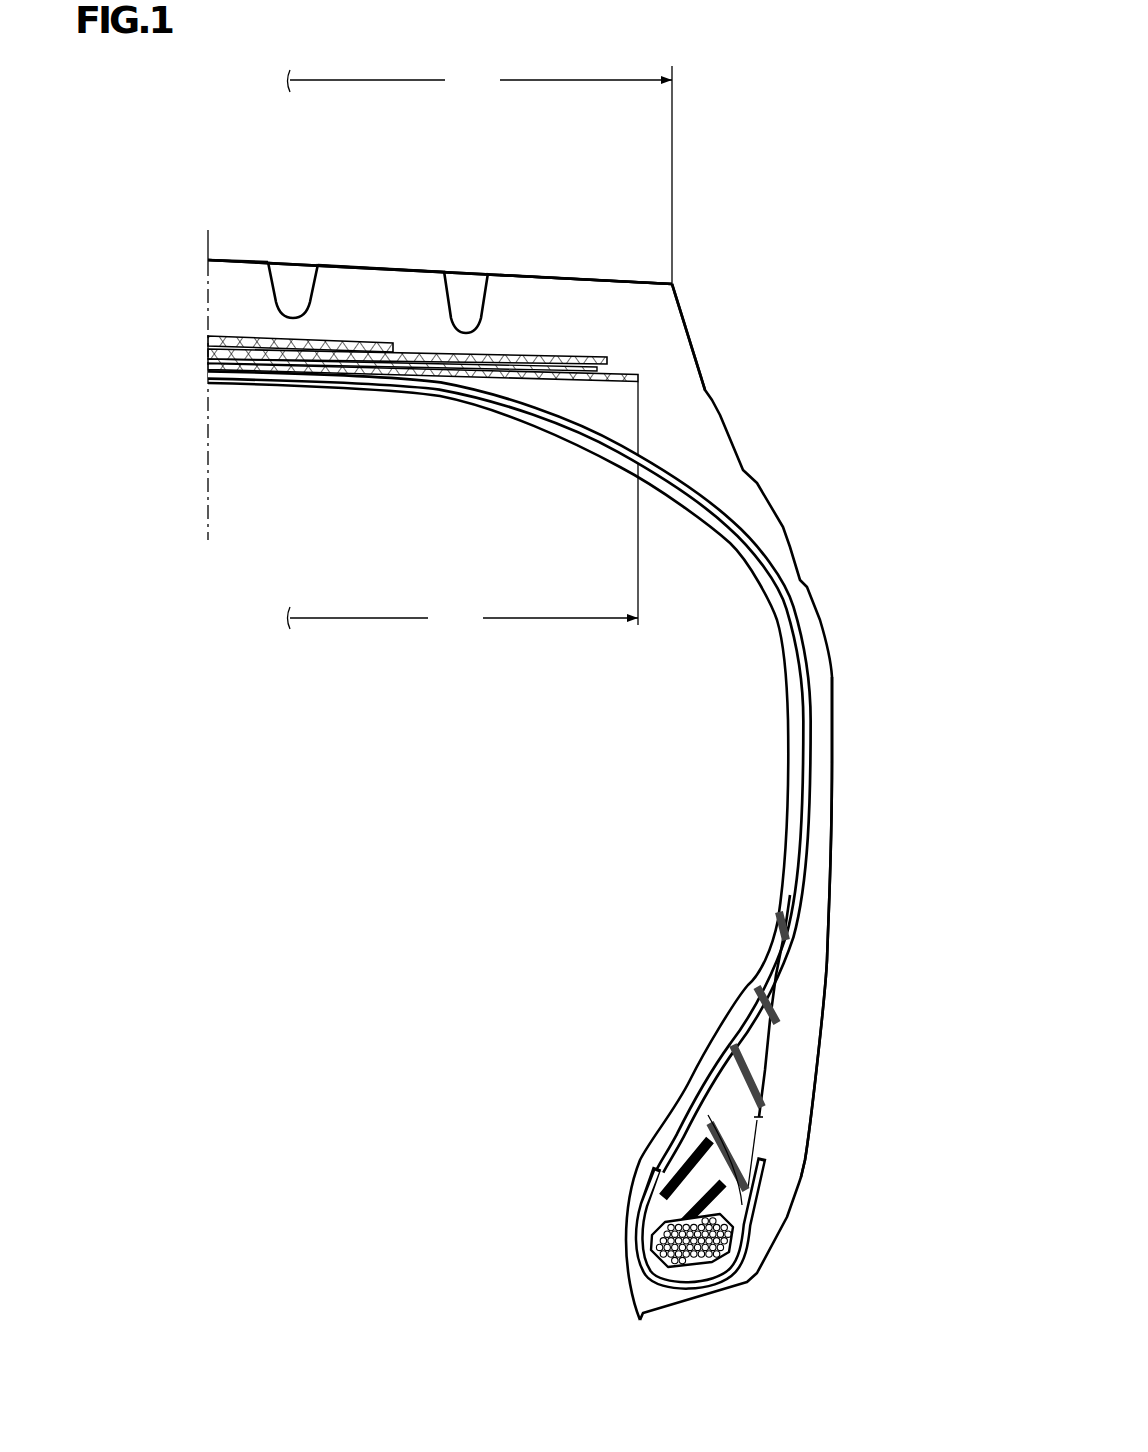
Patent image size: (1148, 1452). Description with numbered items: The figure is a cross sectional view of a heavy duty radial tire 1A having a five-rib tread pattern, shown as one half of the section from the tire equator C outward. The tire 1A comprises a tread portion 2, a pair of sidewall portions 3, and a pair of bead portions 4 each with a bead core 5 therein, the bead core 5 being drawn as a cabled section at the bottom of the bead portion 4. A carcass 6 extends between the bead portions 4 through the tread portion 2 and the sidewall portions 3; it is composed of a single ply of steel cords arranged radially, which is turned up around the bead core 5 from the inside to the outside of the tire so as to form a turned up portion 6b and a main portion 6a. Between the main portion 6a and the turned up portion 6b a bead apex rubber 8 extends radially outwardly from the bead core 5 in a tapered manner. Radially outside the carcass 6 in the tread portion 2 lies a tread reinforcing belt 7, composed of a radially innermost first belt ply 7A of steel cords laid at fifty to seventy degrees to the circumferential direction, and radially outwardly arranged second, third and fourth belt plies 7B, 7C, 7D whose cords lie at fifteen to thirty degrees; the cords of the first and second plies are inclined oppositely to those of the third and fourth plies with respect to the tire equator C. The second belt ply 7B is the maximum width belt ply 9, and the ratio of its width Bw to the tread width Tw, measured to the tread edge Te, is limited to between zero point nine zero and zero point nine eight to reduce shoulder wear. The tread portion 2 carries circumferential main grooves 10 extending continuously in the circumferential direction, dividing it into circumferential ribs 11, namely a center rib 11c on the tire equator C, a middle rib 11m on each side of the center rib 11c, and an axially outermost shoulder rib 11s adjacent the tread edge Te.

The heavy duty radial tire 1A is at (741, 386).
The tread portion 2 is at (440, 220).
The sidewall portion 3 is at (861, 812).
The bead portion 4 is at (629, 1213).
The bead core 5 is at (656, 1262).
The carcass 6 is at (507, 782).
The main portion 6a is at (772, 948).
The turned up portion 6b is at (765, 1135).
The tread reinforcing belt 7 is at (423, 457).
The first belt ply 7A is at (235, 517).
The second belt ply 7B is at (402, 440).
The third belt ply 7C is at (318, 357).
The fourth belt ply 7D is at (262, 350).
The bead apex rubber 8 is at (735, 1120).
The maximum width belt ply 9 is at (392, 366).
The circumferential main groove 10 is at (296, 272).
The circumferential rib 11 is at (566, 292).
The shoulder rib 11s is at (586, 279).
The center rib 11c is at (237, 262).
The middle rib 11m is at (378, 262).
The tire equator C is at (209, 369).
The tread edge Te is at (704, 296).
The tread width Tw is at (480, 174).
The width of the maximum width belt ply Bw is at (463, 509).